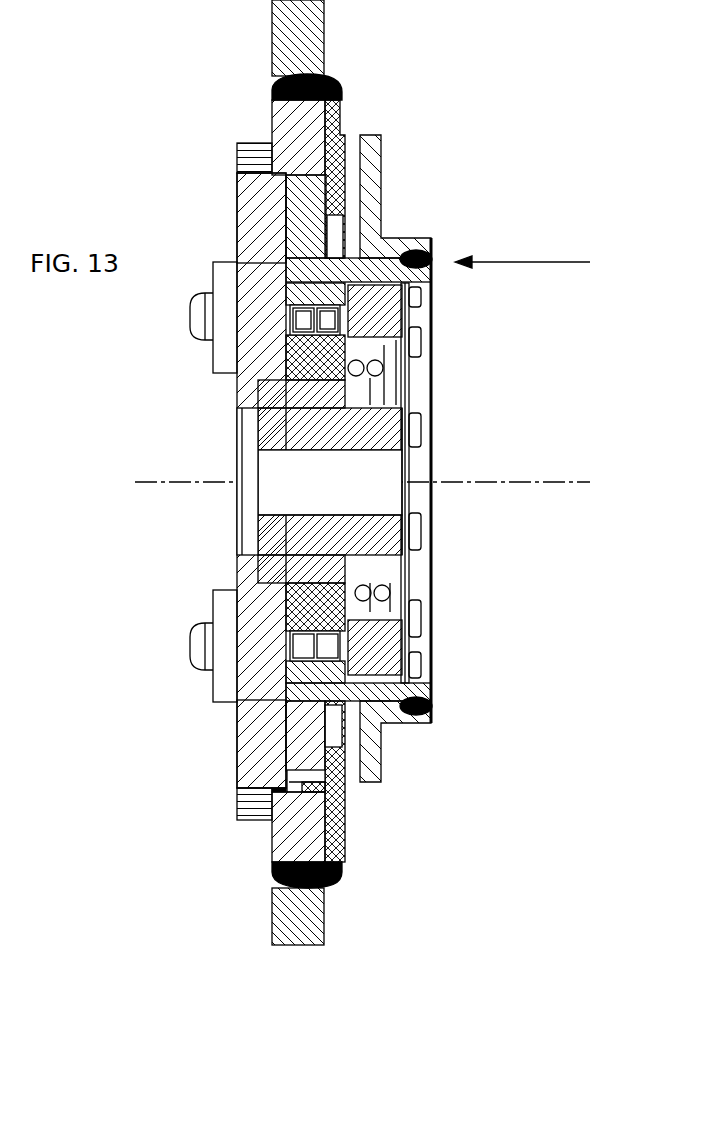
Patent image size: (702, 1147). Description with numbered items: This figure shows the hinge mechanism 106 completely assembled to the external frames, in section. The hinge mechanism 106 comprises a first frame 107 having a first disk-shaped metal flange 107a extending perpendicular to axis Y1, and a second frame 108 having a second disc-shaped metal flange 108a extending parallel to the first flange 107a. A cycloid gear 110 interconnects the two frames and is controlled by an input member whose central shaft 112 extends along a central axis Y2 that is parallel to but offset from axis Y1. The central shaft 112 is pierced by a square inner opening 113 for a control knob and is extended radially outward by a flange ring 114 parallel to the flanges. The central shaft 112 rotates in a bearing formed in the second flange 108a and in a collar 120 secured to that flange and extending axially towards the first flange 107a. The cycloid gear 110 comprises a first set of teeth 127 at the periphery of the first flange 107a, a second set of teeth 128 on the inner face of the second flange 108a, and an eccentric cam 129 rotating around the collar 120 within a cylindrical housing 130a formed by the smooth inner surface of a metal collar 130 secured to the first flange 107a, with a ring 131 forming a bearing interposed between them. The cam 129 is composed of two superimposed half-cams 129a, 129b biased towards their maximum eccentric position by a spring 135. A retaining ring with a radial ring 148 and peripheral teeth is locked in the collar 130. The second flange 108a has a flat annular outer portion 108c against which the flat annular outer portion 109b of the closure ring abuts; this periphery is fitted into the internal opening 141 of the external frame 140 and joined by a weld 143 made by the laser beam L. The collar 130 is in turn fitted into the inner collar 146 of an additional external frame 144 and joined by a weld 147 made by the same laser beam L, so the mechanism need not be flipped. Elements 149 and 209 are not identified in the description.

The hinge mechanism 106 is at (452, 132).
The first frame 107 is at (392, 706).
The first disk-shaped metal flange 107a is at (310, 724).
The second frame 108 is at (230, 775).
The second disc-shaped metal flange 108a is at (250, 212).
The flat annular outer portion 108c is at (287, 118).
The flat annular outer portion of the closure ring 109b is at (333, 118).
The cycloid gear 110 is at (295, 798).
The central shaft 112 is at (307, 533).
The inner opening 113 is at (265, 467).
The flange ring 114 is at (402, 405).
The collar 120 is at (308, 568).
The first circular set of teeth 127 is at (305, 784).
The second circular set of teeth 128 is at (310, 792).
The eccentric cam 129 is at (350, 348).
The half-cam 129a is at (305, 355).
The half-cam 129b is at (318, 368).
The metal collar 130 is at (432, 692).
The cylindrical housing 130a is at (432, 682).
The ring forming a bearing 131 is at (310, 675).
The spring 135 is at (377, 385).
The external frame 140 is at (298, 930).
The internal opening 141 is at (280, 877).
The weld 143 is at (332, 82).
The additional external frame 144 is at (370, 180).
The inner collar 146 is at (402, 248).
The weld 147 is at (432, 258).
The radial ring 148 is at (410, 585).
The clip tabs 149 is at (465, 482).
The seal edge 209 is at (350, 86).
The laser beam L is at (553, 265).
The axis Y1 is at (470, 488).
The central axis Y2 is at (470, 476).